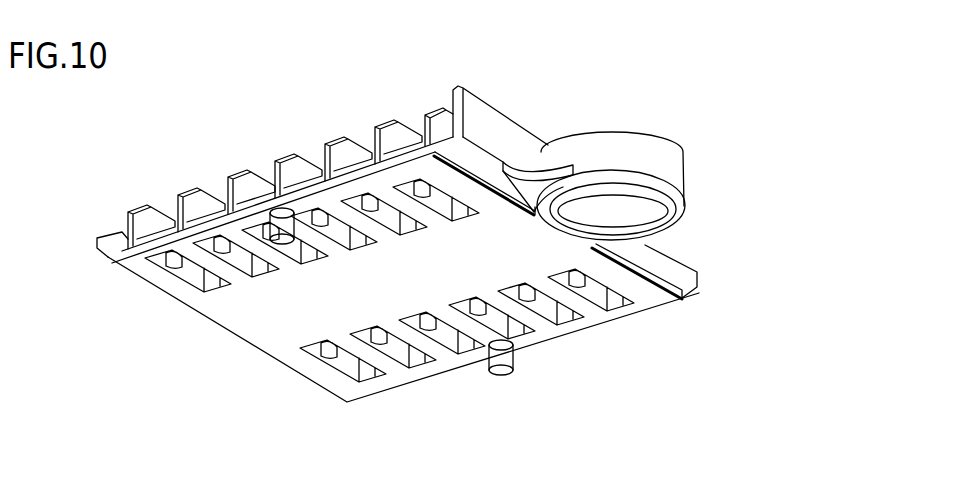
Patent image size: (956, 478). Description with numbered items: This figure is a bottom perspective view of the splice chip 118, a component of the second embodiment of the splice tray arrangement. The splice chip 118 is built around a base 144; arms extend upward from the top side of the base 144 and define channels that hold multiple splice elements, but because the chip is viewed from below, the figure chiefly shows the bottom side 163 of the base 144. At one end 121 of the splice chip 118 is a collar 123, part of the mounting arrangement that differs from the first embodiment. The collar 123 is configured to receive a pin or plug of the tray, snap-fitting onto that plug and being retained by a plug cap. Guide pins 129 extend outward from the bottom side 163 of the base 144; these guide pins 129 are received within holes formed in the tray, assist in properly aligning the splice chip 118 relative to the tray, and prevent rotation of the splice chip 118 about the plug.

The splice chip 118 is at (598, 156).
The end of the splice chip 121 is at (553, 97).
The collar 123 is at (660, 165).
The guide pins 129 is at (280, 241).
The base 144 is at (145, 242).
The bottom side of the base 163 is at (403, 290).